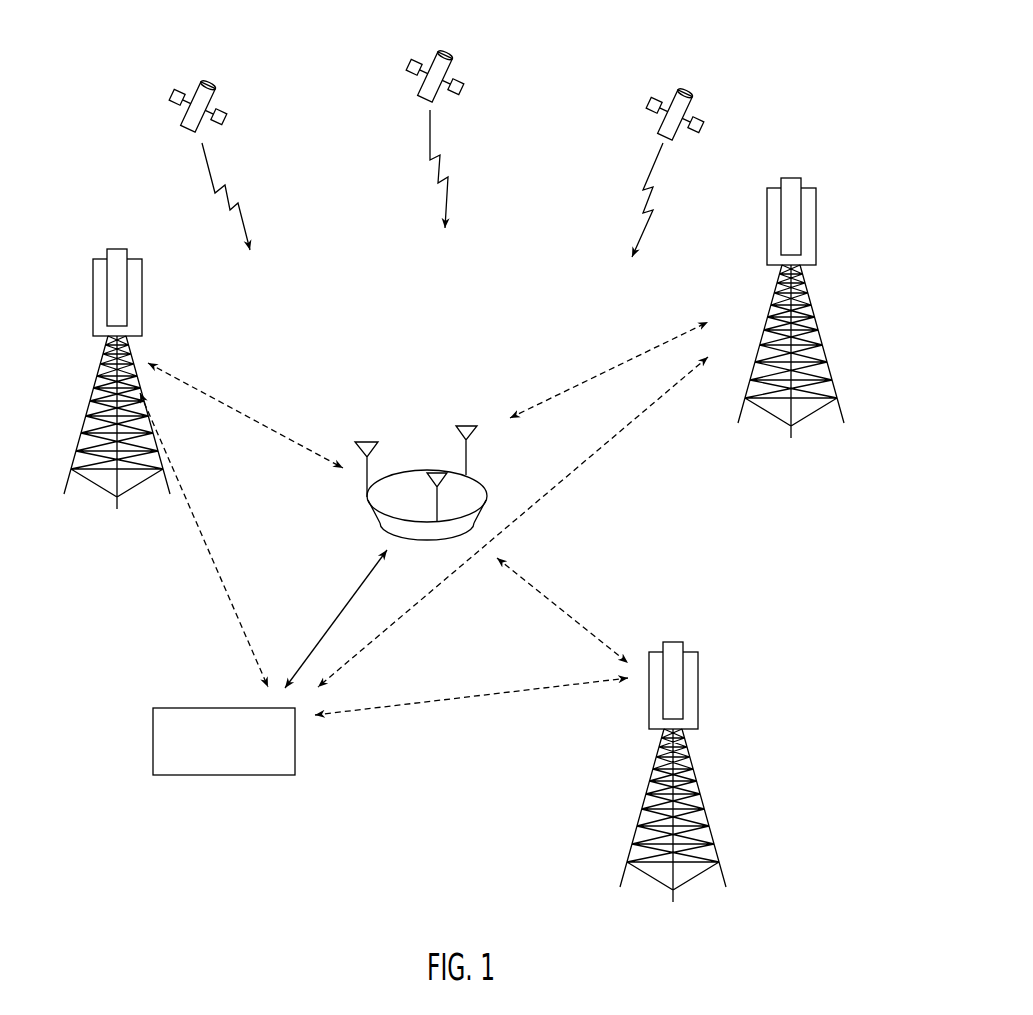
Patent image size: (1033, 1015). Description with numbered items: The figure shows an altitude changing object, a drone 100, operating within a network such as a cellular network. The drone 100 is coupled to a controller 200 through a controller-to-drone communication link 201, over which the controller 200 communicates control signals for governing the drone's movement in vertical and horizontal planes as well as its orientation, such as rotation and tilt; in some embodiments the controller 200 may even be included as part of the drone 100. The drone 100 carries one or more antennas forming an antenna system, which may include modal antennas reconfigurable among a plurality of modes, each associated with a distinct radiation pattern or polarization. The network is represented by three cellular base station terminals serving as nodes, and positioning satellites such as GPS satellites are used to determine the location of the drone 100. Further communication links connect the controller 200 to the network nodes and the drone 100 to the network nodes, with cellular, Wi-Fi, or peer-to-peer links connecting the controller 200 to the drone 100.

The drone 100 is at (418, 490).
The controller 200 is at (153, 743).
The controller-to-drone communication link 201 is at (330, 627).